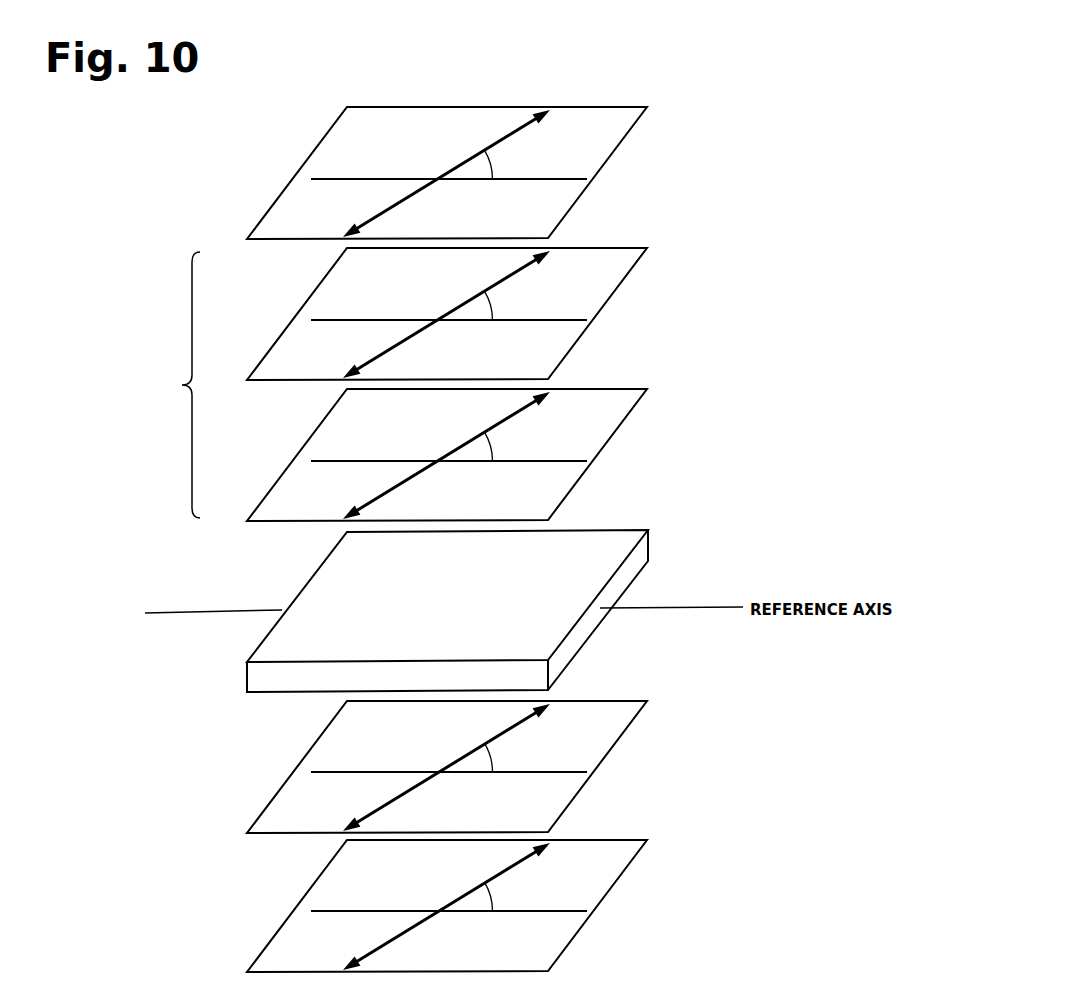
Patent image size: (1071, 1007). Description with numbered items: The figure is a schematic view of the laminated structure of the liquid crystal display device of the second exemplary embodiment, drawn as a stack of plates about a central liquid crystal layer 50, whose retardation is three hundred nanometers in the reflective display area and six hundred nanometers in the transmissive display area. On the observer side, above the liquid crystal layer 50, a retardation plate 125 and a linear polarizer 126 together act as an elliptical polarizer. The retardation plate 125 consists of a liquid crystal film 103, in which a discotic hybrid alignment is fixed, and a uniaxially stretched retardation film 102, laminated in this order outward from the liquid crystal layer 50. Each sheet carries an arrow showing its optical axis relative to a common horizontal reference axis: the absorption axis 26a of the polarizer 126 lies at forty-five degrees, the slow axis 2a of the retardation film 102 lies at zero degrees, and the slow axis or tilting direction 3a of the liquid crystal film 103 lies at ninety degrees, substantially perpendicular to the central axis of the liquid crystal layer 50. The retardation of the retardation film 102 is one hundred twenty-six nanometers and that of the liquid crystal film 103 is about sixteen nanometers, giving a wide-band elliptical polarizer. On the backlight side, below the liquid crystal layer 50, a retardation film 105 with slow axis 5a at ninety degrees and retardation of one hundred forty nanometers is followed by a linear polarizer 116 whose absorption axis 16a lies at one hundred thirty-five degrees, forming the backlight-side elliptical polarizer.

The linear polarizer 126 is at (330, 157).
The retardation film 102 is at (330, 298).
The liquid crystal film 103 is at (330, 439).
The retardation plate 125 is at (167, 385).
The liquid crystal layer 50 is at (330, 580).
The retardation film 105 is at (330, 750).
The linear polarizer 116 is at (330, 889).
The absorption axis 26a is at (477, 173).
The slow axis 2a is at (472, 314).
The slow axis (tilting direction) 3a is at (472, 455).
The slow axis 5a is at (472, 767).
The absorption axis 16a is at (477, 906).